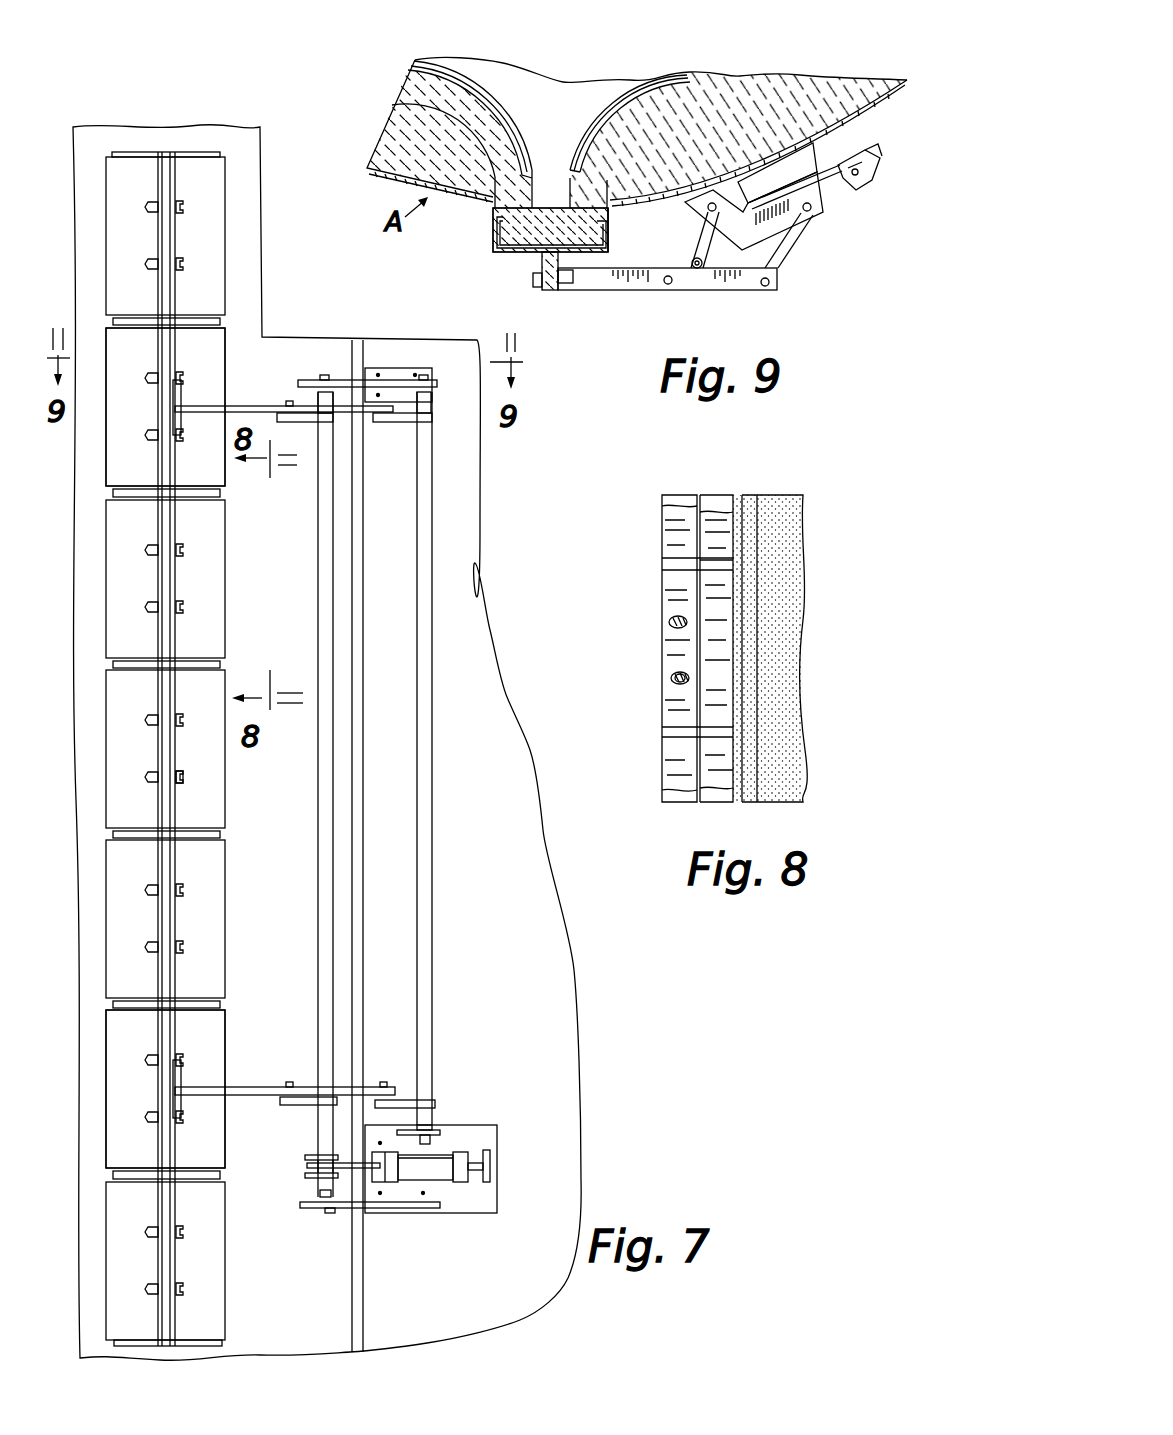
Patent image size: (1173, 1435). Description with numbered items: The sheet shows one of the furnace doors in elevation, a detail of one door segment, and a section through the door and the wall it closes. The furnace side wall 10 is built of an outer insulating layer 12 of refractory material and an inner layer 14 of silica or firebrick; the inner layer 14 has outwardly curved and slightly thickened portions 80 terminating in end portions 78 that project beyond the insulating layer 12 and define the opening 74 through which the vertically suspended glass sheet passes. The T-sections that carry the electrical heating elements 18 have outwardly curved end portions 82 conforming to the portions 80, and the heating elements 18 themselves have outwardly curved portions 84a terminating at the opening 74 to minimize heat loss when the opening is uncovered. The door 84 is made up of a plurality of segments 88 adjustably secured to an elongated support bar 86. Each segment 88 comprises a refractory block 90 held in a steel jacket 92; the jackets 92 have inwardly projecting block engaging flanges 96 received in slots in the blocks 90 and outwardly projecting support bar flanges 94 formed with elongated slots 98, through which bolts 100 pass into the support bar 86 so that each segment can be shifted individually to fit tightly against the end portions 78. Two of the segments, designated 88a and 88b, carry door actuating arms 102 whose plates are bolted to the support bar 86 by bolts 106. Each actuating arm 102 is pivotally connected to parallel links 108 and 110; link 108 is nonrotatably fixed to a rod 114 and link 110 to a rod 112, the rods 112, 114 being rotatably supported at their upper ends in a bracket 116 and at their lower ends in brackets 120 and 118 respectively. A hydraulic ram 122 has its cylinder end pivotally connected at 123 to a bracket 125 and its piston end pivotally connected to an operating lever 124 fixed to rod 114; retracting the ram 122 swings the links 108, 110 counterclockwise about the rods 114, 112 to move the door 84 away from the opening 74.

In FIG. 7, the side wall 10 is at (553, 985).
In FIG. 9, the side wall 10 is at (395, 181).
In FIG. 9, the insulating layer 12 is at (396, 130).
In FIG. 9, the inner layer 14 is at (412, 95).
In FIG. 9, the electrical heating elements 18 is at (497, 118).
In FIG. 9, the openings 74 is at (605, 178).
In FIG. 9, the end portions 78 is at (497, 198).
In FIG. 9, the outwardly curved portions 80 is at (637, 130).
In FIG. 9, the outwardly curved end portions 82 is at (577, 140).
In FIG. 7, the door 84 is at (234, 623).
In FIG. 9, the outwardly curved portions 84a is at (521, 165).
In FIG. 7, the support bar 86 is at (165, 302).
In FIG. 8, the support bar 86 is at (668, 565).
In FIG. 9, the support bar 86 is at (548, 262).
In FIG. 7, the segments 88 is at (219, 221).
In FIG. 8, the segments 88 is at (752, 628).
In FIG. 7, the segment 88a is at (232, 346).
In FIG. 9, the segment 88a is at (488, 252).
In FIG. 7, the segment 88b is at (229, 1036).
In FIG. 8, the block 90 is at (752, 667).
In FIG. 9, the block 90 is at (611, 245).
In FIG. 7, the jackets 92 is at (120, 937).
In FIG. 9, the jackets 92 is at (520, 252).
In FIG. 7, the support bar flanges 94 is at (180, 758).
In FIG. 8, the support bar flanges 94 is at (672, 612).
In FIG. 9, the block engaging flanges 96 is at (492, 232).
In FIG. 8, the elongated slots 98 is at (672, 677).
In FIG. 7, the bolts 100 is at (183, 780).
In FIG. 8, the bolts 100 is at (672, 683).
In FIG. 7, the door actuating arms 102 is at (260, 406).
In FIG. 9, the door actuating arms 102 is at (602, 288).
In FIG. 9, the bolts 106 is at (535, 281).
In FIG. 7, the link 108 is at (303, 413).
In FIG. 9, the link 108 is at (685, 268).
In FIG. 7, the link 110 is at (380, 422).
In FIG. 9, the link 110 is at (780, 268).
In FIG. 7, the rod 112 is at (430, 866).
In FIG. 9, the rod 112 is at (810, 211).
In FIG. 7, the rod 114 is at (322, 893).
In FIG. 9, the rod 114 is at (712, 203).
In FIG. 7, the bracket 116 is at (338, 380).
In FIG. 9, the bracket 116 is at (790, 226).
In FIG. 7, the bracket 118 is at (310, 1210).
In FIG. 7, the bracket 120 is at (442, 1130).
In FIG. 7, the hydraulic ram 122 is at (430, 1167).
In FIG. 9, the hydraulic ram 122 is at (830, 206).
In FIG. 9, the pivotal connection 123 is at (858, 186).
In FIG. 7, the operating lever 124 is at (306, 1176).
In FIG. 9, the operating lever 124 is at (704, 258).
In FIG. 9, the bracket 125 is at (872, 164).